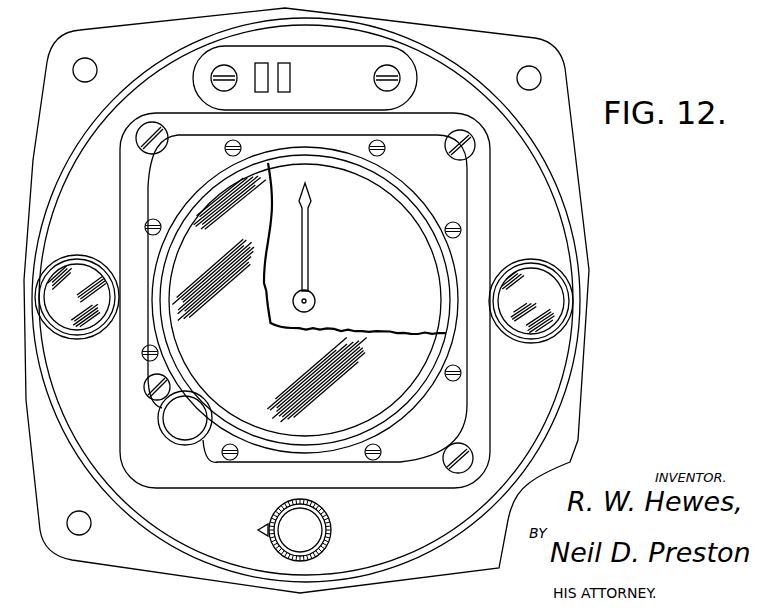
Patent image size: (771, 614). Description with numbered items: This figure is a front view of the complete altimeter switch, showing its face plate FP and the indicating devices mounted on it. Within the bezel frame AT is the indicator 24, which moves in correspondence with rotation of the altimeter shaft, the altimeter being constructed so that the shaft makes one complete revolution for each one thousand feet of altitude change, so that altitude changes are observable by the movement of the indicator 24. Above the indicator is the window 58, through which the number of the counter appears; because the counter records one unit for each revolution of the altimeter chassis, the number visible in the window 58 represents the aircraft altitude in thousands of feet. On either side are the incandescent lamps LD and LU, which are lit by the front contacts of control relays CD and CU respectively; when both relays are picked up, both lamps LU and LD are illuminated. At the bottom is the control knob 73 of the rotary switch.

The face plate FP is at (580, 198).
The instrument bezel frame AT is at (490, 201).
The indicator 24 is at (303, 253).
The window 58 is at (298, 57).
The lamp LD is at (60, 270).
The lamp LU is at (535, 277).
The control knob 73 is at (322, 509).